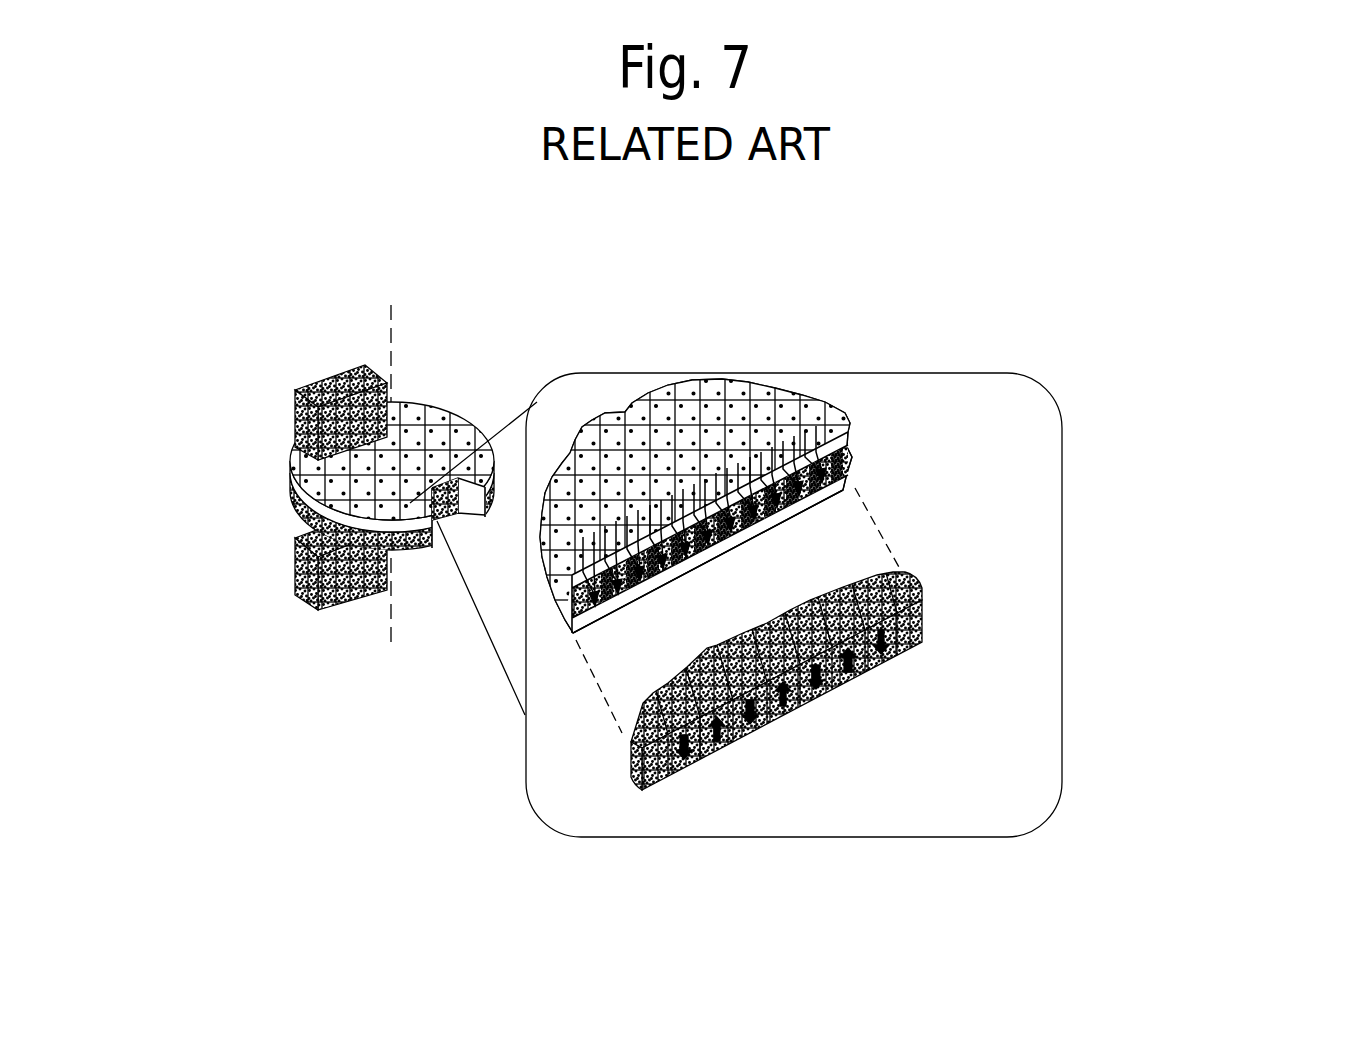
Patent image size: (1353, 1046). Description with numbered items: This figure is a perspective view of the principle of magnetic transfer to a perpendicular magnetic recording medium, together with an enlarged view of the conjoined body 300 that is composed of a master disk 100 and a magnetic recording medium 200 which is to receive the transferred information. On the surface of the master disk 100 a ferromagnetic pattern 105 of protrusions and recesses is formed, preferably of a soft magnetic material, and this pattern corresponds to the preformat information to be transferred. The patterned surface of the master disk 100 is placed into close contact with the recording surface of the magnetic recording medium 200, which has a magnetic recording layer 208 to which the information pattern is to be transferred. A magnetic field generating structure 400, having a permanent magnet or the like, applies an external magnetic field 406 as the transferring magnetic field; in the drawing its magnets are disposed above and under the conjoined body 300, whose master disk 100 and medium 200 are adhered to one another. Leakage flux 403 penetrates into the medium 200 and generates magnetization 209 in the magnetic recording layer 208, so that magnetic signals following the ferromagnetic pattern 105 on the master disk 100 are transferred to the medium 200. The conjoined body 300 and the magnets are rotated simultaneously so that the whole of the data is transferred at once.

The master disk 100 is at (372, 532).
The magnetic recording medium 200 is at (418, 553).
The conjoined body 300 is at (279, 651).
The magnetic field generating structure 400 is at (293, 563).
The external magnetic field 406 is at (780, 360).
The leakage flux 403 is at (840, 450).
The ferromagnetic pattern 105 is at (730, 551).
The magnetic recording layer 208 is at (944, 681).
The magnetization 209 is at (832, 687).